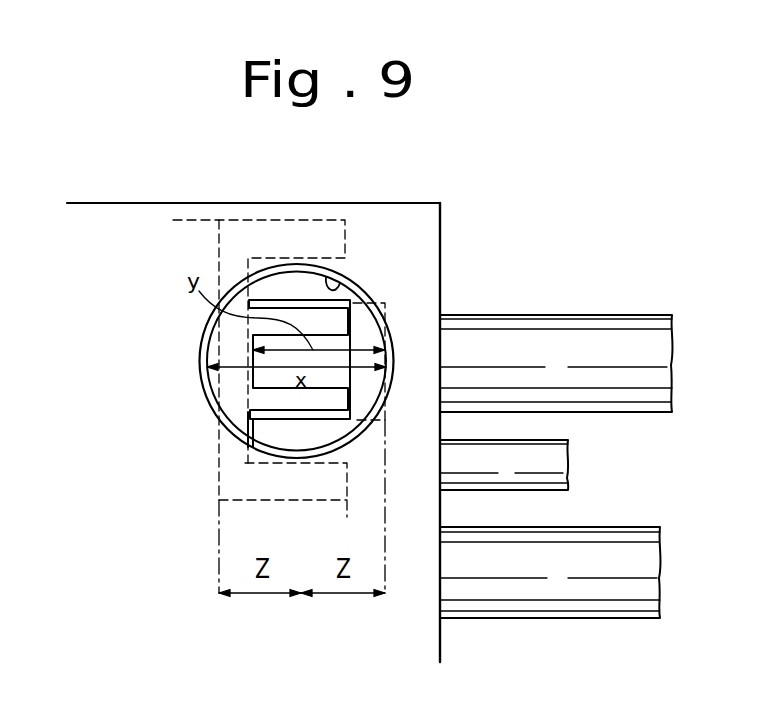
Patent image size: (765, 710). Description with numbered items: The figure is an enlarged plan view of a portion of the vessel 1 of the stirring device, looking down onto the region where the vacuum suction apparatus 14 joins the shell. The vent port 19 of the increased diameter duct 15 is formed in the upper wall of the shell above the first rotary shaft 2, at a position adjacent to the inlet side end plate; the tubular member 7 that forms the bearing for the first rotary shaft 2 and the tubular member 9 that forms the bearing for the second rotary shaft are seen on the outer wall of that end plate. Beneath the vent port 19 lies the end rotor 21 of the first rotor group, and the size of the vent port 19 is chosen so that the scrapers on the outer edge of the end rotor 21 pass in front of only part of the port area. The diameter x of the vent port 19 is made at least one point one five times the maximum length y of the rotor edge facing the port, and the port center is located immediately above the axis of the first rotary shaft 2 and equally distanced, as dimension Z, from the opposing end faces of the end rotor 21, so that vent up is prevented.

The vessel 1 is at (442, 228).
The first rotary shaft 2 is at (117, 231).
The tubular member 7 is at (585, 330).
The tubular member 9 is at (559, 593).
The vacuum suction apparatus 14 is at (203, 404).
The increased diameter duct 15 is at (203, 339).
The vent port 19 is at (340, 290).
The end rotor 21 is at (363, 337).